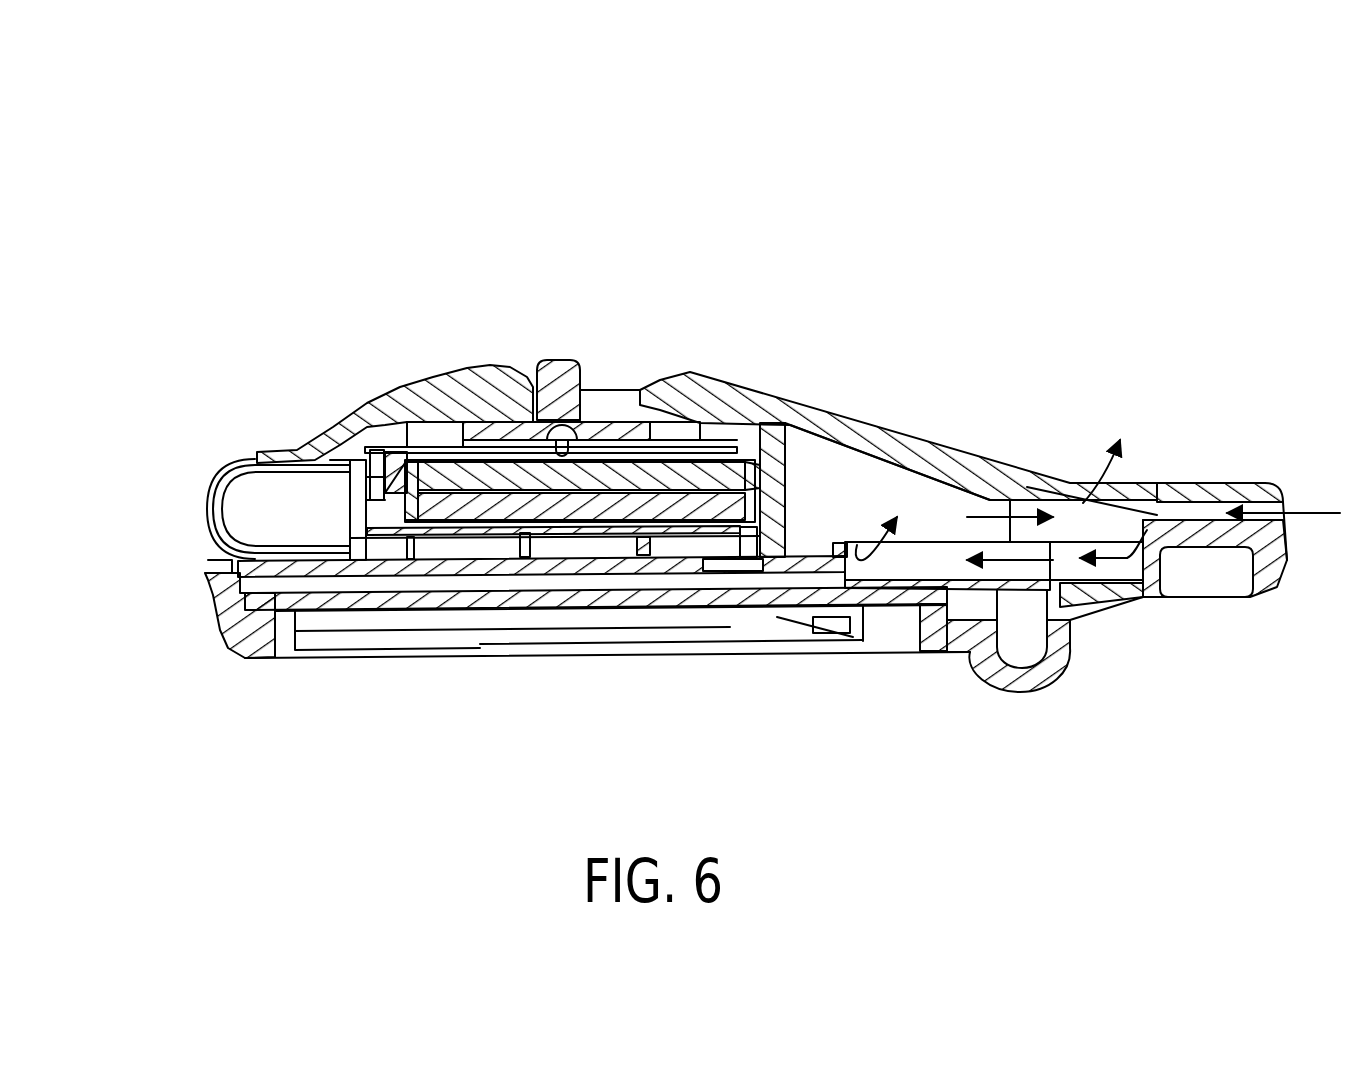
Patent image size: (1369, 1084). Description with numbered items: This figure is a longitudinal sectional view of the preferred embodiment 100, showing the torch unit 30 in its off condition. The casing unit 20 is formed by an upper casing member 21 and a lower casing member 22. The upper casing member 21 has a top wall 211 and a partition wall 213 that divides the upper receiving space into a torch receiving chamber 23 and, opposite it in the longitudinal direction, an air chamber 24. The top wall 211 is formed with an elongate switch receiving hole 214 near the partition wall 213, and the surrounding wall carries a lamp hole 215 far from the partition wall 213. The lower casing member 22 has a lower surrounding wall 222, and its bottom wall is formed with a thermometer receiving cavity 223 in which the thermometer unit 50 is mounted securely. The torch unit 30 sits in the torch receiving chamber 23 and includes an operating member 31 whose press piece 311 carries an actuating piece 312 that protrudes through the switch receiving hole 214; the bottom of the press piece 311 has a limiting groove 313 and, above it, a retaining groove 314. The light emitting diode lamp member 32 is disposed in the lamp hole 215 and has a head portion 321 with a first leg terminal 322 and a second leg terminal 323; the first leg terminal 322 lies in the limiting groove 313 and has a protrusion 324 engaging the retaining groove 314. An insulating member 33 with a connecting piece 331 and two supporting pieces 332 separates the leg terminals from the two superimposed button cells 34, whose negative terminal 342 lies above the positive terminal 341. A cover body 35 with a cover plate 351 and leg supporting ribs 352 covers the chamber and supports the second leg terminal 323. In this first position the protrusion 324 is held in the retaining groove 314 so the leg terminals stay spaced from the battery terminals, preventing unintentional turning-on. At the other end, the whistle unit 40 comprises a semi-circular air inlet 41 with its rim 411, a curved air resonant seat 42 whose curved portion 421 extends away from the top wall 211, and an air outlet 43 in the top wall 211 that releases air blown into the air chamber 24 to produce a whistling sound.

The pneumatic dispensing device 100 is at (1024, 266).
The casing unit 20 is at (826, 388).
The upper casing member 21 is at (870, 433).
The top wall 211 is at (680, 395).
The partition wall 213 is at (795, 422).
The switch receiving hole 214 is at (655, 415).
The lamp hole 215 is at (290, 451).
The lower casing member 22 is at (228, 655).
The lower surrounding wall 222 is at (217, 597).
The thermometer receiving cavity 223 is at (921, 608).
The torch receiving chamber 23 is at (400, 453).
The air chamber 24 is at (930, 483).
The torch unit 30 is at (208, 486).
The operating member 31 is at (541, 360).
The press piece 311 is at (647, 420).
The actuating piece 312 is at (589, 392).
The limiting groove 313 is at (472, 428).
The retaining groove 314 is at (545, 424).
The light emitting diode lamp member 32 is at (212, 520).
The head portion 321 is at (244, 483).
The first leg terminal 322 is at (440, 450).
The second leg terminal 323 is at (503, 540).
The protrusion 324 is at (515, 435).
The insulating member 33 is at (366, 562).
The connecting piece 331 is at (410, 562).
The supporting pieces 332 is at (376, 452).
The button cells 34 is at (736, 462).
The positive terminal 341 is at (708, 545).
The negative terminal 342 is at (720, 447).
The cover body 35 is at (562, 560).
The cover plate 351 is at (640, 540).
The leg supporting ribs 352 is at (670, 540).
The whistle unit 40 is at (1080, 484).
The air inlet 41 is at (1220, 507).
The nozzle tip 411 is at (1282, 500).
The air resonant seat 42 is at (1027, 692).
The curved portion 421 is at (957, 622).
The air outlet 43 is at (1150, 486).
The thermometer unit 50 is at (783, 657).